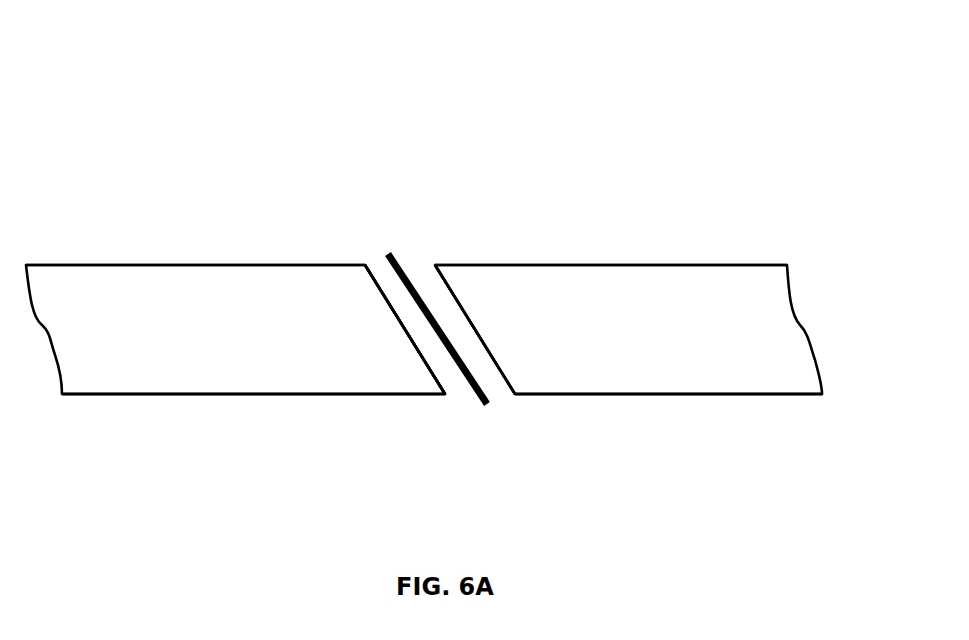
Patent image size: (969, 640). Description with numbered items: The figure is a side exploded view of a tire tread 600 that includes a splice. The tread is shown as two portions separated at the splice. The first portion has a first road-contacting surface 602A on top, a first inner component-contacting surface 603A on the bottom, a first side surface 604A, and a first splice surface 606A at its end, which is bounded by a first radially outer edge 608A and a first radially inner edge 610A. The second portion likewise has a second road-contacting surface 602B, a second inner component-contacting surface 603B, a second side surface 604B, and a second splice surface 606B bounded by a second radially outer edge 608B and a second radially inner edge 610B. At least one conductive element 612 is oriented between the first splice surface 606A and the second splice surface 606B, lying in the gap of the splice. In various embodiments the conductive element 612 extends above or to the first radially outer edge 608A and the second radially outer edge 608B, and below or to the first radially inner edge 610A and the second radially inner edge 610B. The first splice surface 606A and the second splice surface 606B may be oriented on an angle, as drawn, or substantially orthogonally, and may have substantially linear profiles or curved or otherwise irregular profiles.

The tire tread 600 is at (680, 89).
The first road-contacting surface 602A is at (190, 265).
The second road-contacting surface 602B is at (703, 265).
The first inner component-contacting surface 603A is at (182, 394).
The second inner component-contacting surface 603B is at (767, 394).
The first side surface 604A is at (85, 300).
The second side surface 604B is at (610, 300).
The first splice surface 606A is at (418, 352).
The second splice surface 606B is at (492, 352).
The first radially outer edge 608A is at (365, 265).
The second radially outer edge 608B is at (435, 265).
The first radially inner edge 610A is at (440, 394).
The second radially inner edge 610B is at (517, 394).
The conductive element 612 is at (398, 253).